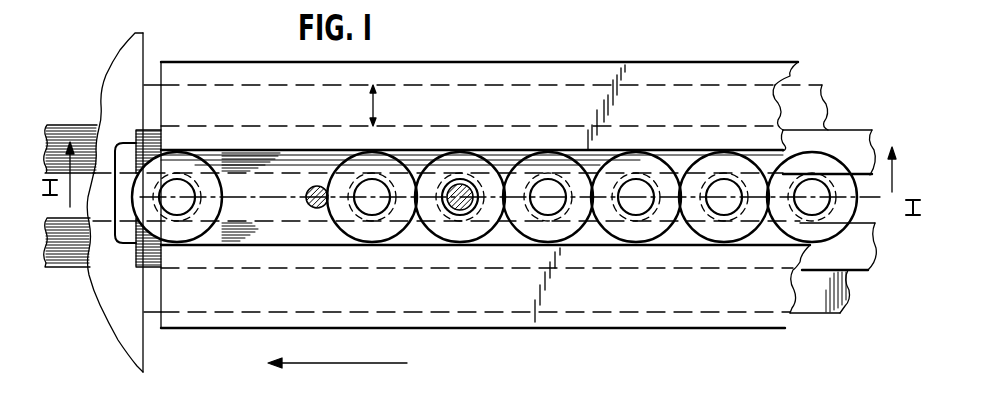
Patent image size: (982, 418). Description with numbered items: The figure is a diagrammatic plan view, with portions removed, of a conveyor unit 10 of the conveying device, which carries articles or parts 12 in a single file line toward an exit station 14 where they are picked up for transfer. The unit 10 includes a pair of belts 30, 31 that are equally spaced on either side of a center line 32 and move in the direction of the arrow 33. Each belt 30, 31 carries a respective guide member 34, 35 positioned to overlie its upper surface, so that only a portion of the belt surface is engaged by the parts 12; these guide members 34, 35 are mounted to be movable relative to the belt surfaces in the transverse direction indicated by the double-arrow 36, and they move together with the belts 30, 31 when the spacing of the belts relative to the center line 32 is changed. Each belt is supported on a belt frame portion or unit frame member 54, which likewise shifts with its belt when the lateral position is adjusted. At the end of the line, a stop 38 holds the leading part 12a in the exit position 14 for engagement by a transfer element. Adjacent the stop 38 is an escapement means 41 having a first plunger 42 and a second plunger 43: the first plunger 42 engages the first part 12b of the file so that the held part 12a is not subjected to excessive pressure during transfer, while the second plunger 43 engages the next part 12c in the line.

The conveyor unit 10 is at (660, 63).
The parts 12 is at (710, 240).
The leading part 12a is at (188, 232).
The first part in the file 12b is at (378, 233).
The next part 12c is at (462, 237).
The exit station 14 is at (185, 148).
The belt 30 is at (820, 140).
The belt 31 is at (857, 260).
The center line 32 is at (555, 192).
The arrow 33 is at (352, 365).
The guide member 34 is at (750, 72).
The guide member 35 is at (770, 323).
The double-arrow 36 is at (375, 107).
The stop 38 is at (144, 360).
The escapement means 41 is at (557, 412).
The first plunger 42 is at (313, 187).
The second plunger 43 is at (463, 190).
The unit frame member 54 is at (805, 100).